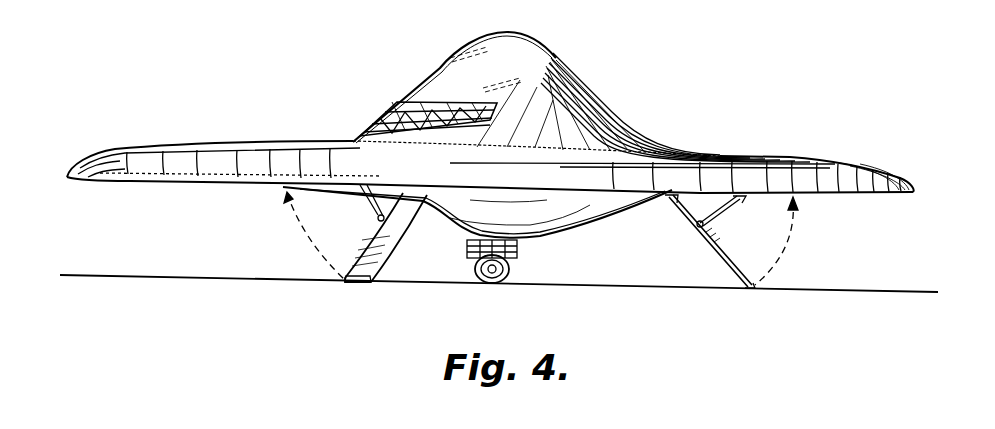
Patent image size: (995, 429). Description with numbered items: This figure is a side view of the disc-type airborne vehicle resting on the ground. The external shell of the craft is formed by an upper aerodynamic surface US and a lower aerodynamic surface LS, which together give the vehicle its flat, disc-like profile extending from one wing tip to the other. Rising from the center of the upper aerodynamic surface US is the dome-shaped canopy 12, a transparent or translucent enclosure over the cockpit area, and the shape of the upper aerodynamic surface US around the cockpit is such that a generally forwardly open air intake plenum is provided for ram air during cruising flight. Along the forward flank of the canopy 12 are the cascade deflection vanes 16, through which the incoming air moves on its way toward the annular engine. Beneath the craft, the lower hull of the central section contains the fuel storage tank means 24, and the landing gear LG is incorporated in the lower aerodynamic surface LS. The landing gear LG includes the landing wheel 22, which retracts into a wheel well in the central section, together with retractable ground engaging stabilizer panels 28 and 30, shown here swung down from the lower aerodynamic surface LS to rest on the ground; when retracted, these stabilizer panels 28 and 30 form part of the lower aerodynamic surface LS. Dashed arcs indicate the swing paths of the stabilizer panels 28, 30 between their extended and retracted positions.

The canopy 12 is at (447, 67).
The cascade deflection vanes 16 is at (388, 121).
The landing wheel 22 is at (510, 275).
The fuel storage tank means 24 is at (450, 233).
The ground engaging stabilizer panel 28 is at (383, 257).
The ground engaging stabilizer panel 30 is at (713, 248).
The upper aerodynamic surface US is at (767, 157).
The lower aerodynamic surface LS is at (819, 196).
The landing gear LG is at (577, 254).